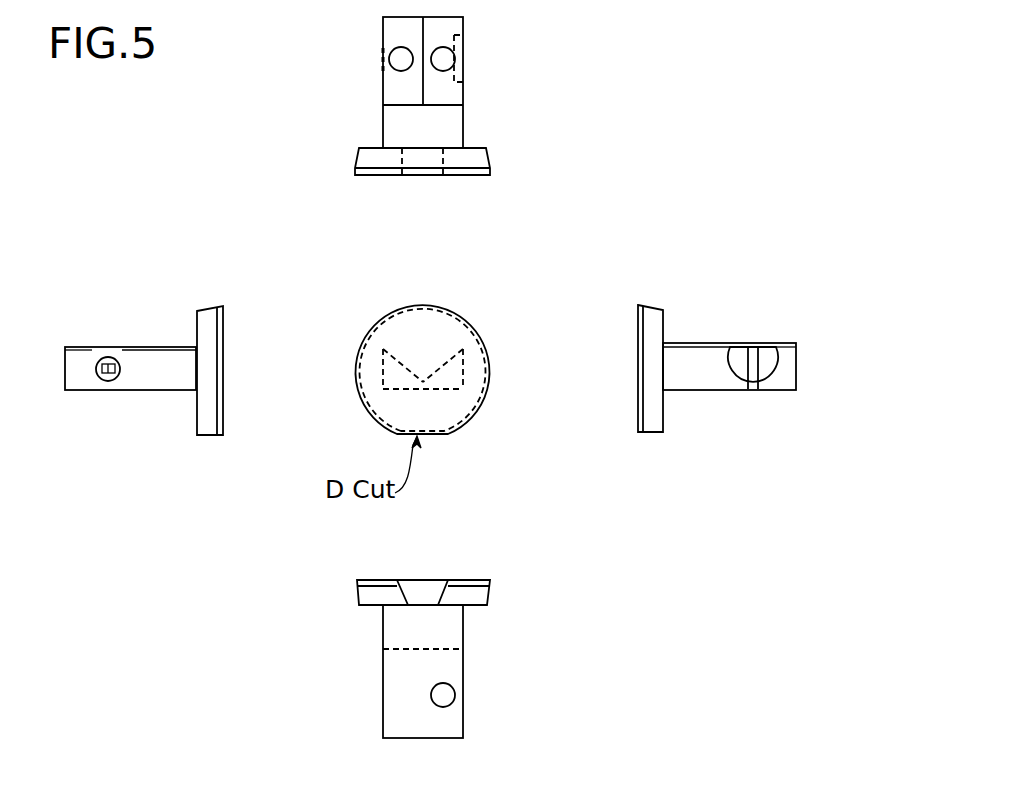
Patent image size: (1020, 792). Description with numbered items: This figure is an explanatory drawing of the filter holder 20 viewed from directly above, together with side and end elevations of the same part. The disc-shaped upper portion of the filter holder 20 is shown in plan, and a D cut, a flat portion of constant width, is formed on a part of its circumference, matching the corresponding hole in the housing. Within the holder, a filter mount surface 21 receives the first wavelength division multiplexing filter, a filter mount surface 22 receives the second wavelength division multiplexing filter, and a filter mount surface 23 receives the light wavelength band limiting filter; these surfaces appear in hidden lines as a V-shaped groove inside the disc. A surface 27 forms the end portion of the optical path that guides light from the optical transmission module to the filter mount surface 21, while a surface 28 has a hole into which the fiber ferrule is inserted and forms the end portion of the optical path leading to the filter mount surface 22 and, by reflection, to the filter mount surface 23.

The filter holder 20 is at (489, 391).
The filter mount surface 21 is at (407, 365).
The filter mount surface 22 is at (450, 365).
The filter mount surface 23 is at (433, 390).
The surface 27 is at (383, 367).
The surface 28 is at (463, 364).